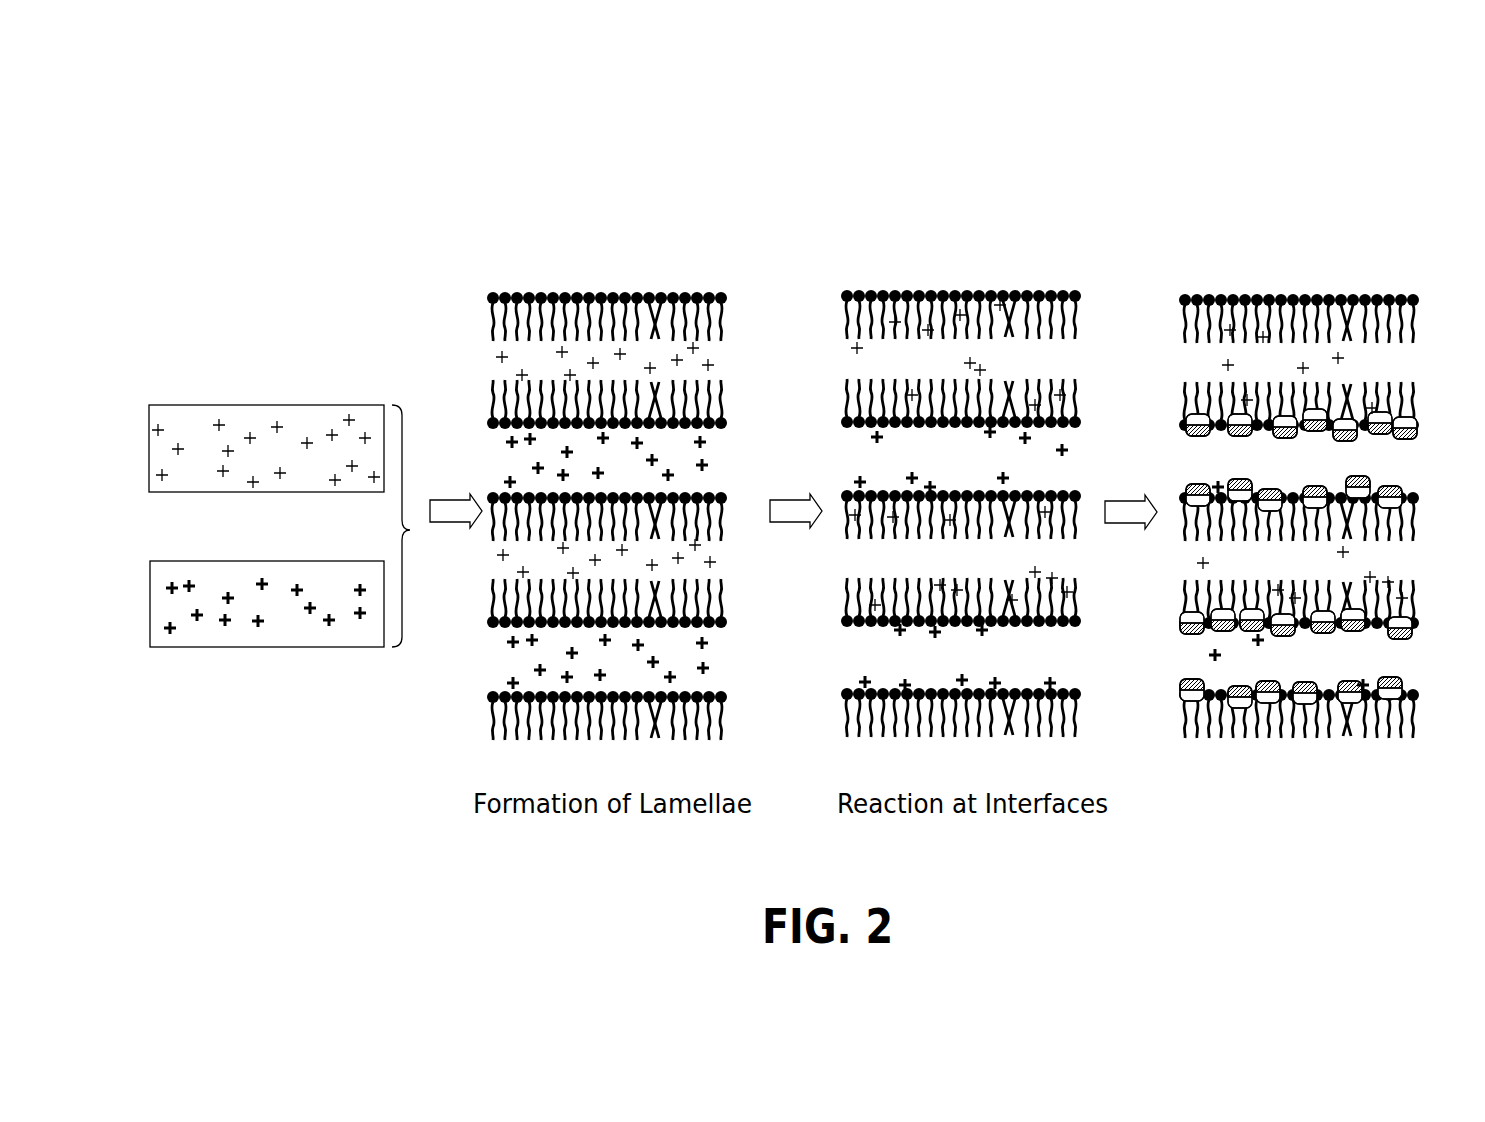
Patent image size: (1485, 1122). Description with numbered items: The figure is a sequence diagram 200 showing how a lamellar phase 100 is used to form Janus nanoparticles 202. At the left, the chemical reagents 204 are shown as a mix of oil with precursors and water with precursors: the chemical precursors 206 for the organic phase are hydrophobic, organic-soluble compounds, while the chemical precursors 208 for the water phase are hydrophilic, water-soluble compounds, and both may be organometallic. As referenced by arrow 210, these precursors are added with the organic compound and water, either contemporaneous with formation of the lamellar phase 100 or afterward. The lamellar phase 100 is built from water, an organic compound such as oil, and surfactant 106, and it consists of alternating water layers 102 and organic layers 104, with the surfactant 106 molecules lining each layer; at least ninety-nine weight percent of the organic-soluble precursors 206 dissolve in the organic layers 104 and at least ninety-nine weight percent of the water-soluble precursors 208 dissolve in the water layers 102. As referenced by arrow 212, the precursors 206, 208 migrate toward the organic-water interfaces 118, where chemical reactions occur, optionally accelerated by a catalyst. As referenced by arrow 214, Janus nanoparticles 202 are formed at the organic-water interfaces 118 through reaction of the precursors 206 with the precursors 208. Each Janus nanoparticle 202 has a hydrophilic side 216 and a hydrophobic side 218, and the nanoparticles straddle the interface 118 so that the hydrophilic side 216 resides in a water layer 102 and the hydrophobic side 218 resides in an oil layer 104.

The lamellar phase 100 is at (619, 276).
The water layers 102 is at (505, 462).
The organic layers 104 is at (500, 375).
The surfactant 106 is at (493, 705).
The organic-water interfaces 118 is at (847, 625).
The sequence diagram 200 is at (1232, 225).
The Janus nanoparticles 202 is at (1417, 428).
The chemical reagents 204 is at (265, 352).
The chemical precursors for the organic phase 206 is at (160, 432).
The chemical precursors for the water phase 208 is at (165, 628).
The arrow 210 is at (458, 500).
The arrow 212 is at (795, 530).
The arrow 214 is at (1150, 500).
The hydrophilic side 216 is at (1237, 687).
The hydrophobic side 218 is at (1413, 620).